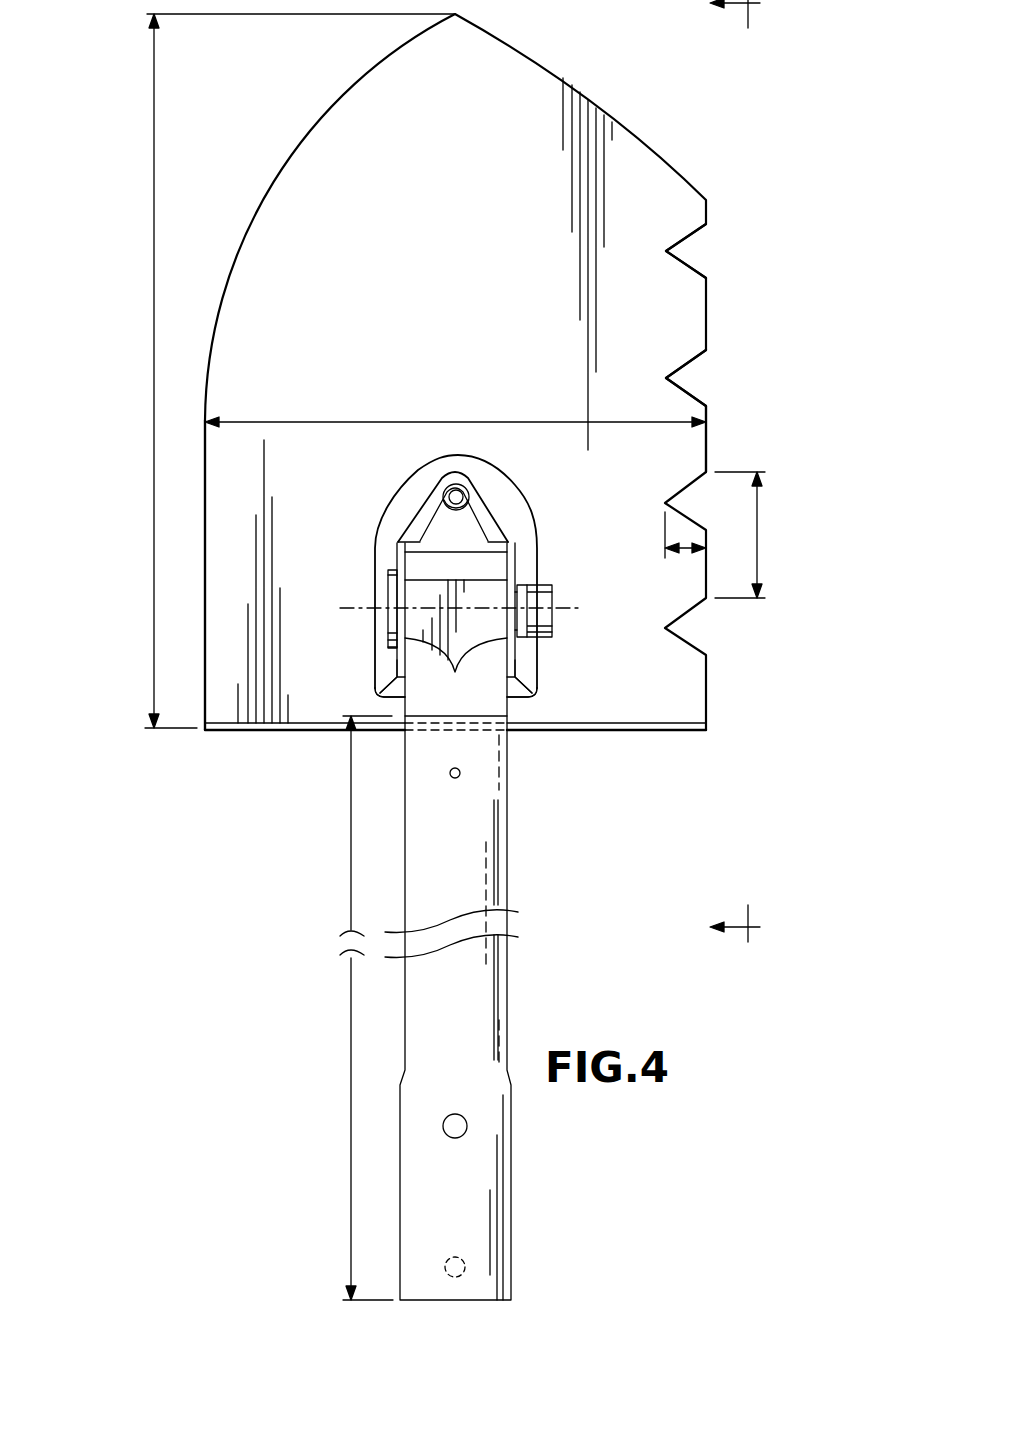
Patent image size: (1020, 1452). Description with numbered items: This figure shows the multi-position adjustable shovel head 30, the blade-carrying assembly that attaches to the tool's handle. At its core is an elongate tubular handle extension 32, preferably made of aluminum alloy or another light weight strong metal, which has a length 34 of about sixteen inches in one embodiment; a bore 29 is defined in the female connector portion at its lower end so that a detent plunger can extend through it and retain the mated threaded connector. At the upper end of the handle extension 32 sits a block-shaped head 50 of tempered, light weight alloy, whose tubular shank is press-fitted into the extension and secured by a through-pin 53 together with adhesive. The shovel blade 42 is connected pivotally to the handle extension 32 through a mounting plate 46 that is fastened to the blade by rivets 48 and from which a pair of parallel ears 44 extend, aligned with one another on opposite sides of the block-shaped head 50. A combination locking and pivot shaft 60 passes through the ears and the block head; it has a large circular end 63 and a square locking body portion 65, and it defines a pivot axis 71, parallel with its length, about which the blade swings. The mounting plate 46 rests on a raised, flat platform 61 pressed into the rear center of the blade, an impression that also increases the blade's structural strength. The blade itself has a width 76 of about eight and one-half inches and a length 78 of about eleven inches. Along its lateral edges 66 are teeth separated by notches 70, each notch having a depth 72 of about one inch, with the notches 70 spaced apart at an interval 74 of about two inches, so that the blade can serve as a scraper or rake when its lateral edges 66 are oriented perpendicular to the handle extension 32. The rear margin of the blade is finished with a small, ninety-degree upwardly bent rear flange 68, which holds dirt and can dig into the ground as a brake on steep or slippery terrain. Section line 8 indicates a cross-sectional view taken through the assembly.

The section line 8- 8 is at (745, 471).
The bore 29 is at (444, 1130).
The multi-position adjustable shovel head 30 is at (592, 805).
The elongate tubular handle extension 32 is at (507, 868).
The length 34 is at (351, 1136).
The shovel blade 42 is at (330, 133).
The ears 44 is at (396, 660).
The mounting plate 46 is at (477, 523).
The rivets 48 is at (448, 487).
The block-shaped head 50 is at (485, 595).
The through-pin 53 is at (462, 775).
The combination locking and pivot shaft 60 is at (553, 597).
The platform 61 is at (500, 533).
The large circular end 63 is at (392, 575).
The square locking body portion 65 is at (540, 620).
The lateral edges 66 is at (708, 450).
The rear flange 68 is at (683, 733).
The notches 70 is at (675, 252).
The pivot axis 71 is at (368, 612).
The depth 72 is at (663, 549).
The interval 74 is at (760, 532).
The width 76 is at (390, 420).
The length 78 is at (154, 225).